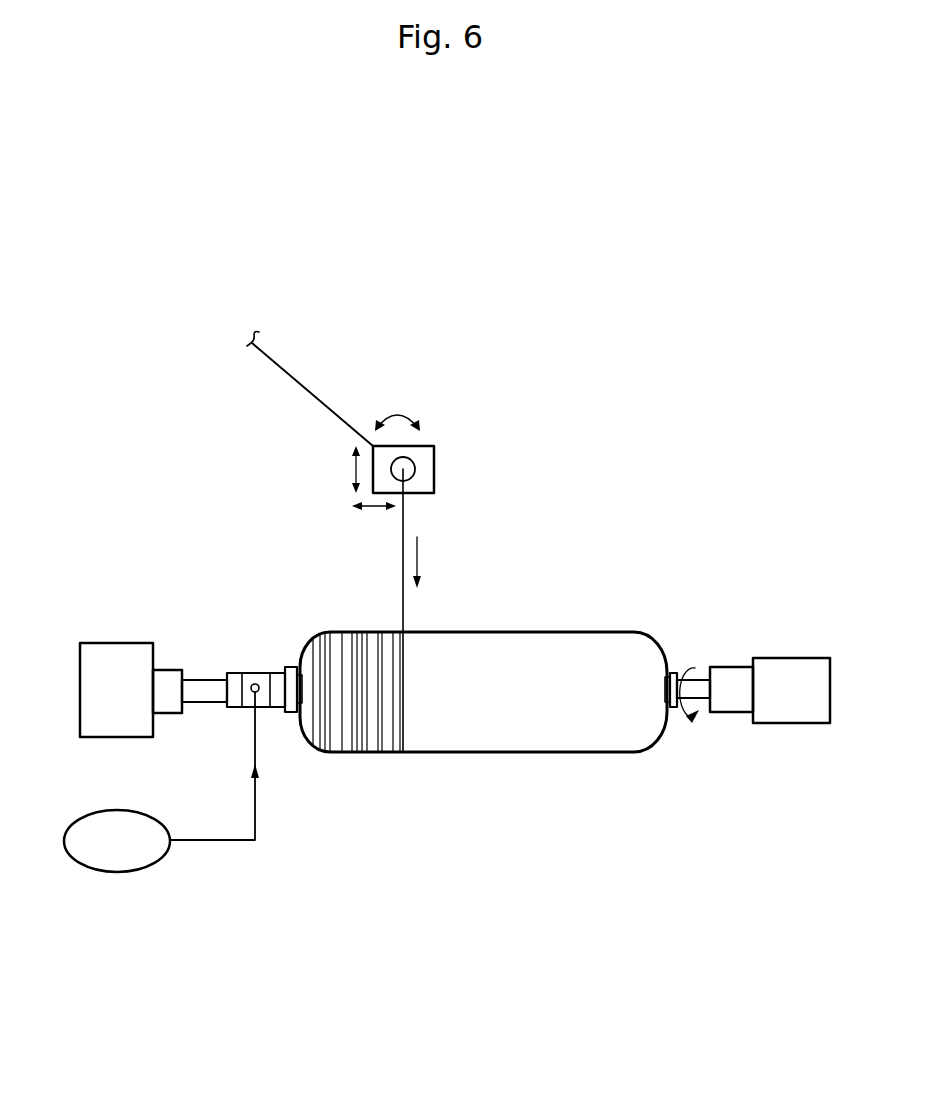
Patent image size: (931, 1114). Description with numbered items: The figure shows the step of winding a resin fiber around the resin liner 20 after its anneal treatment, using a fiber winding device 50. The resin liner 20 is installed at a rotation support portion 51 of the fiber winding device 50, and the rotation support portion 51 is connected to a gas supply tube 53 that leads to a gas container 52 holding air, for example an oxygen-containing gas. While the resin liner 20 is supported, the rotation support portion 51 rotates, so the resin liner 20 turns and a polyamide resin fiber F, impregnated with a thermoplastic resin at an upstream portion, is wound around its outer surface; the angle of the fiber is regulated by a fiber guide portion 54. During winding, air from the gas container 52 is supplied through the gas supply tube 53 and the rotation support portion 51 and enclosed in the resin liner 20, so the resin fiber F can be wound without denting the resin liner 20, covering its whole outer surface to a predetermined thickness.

The resin liner 20 is at (552, 632).
The fiber winding device 50 is at (603, 462).
The rotation support portion 51 is at (253, 673).
The gas container 52 is at (125, 872).
The gas supply tube 53 is at (257, 798).
The fiber guide portion 54 is at (434, 446).
The resin fiber F is at (403, 527).